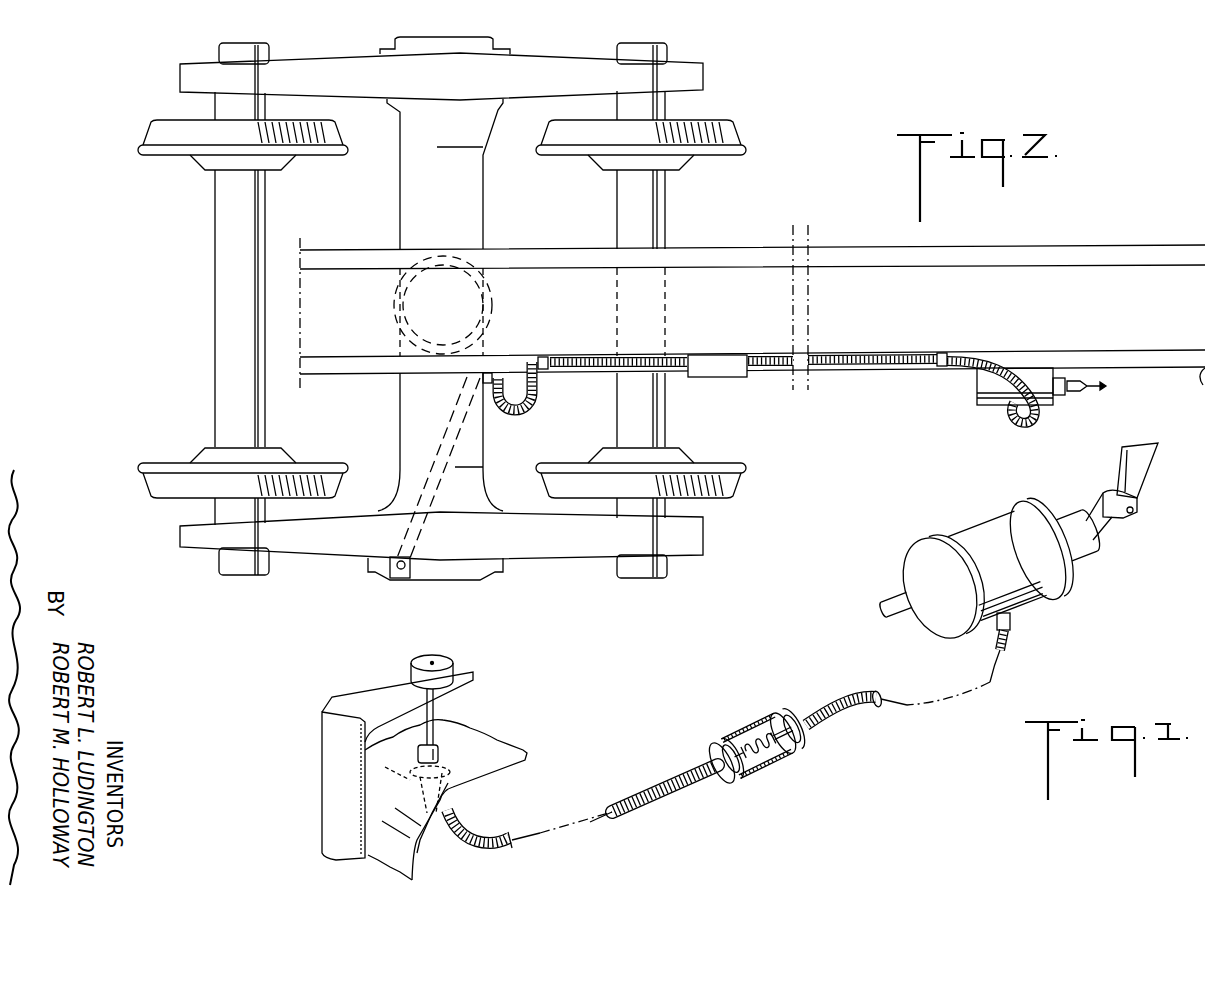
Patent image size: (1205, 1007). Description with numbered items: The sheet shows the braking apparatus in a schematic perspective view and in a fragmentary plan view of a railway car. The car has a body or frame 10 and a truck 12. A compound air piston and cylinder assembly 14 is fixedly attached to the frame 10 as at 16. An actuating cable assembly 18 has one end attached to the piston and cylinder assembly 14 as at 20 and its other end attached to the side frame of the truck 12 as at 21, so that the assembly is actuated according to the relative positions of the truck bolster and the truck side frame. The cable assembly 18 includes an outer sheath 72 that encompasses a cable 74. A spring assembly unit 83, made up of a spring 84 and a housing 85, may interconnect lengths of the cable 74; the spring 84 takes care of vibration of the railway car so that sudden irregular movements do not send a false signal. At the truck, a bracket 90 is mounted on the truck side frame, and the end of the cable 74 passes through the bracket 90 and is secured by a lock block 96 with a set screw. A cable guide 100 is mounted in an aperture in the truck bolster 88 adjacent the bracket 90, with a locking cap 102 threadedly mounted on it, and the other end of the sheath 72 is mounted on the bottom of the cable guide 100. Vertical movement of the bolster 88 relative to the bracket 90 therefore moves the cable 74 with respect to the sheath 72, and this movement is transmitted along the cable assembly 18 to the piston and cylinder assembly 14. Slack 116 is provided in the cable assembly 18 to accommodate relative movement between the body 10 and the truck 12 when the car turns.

In FIG. 2, the body or frame 10 is at (437, 437).
In FIG. 2, the truck 12 is at (122, 99).
In FIG. 2, the compound air piston and cylinder assembly 14 is at (988, 395).
In FIG. 1, the compound air piston and cylinder assembly 14 is at (976, 530).
In FIG. 2, the attachment of the piston and cylinder assembly to the frame 16 is at (1043, 368).
In FIG. 2, the actuating cable assembly 18 is at (870, 362).
In FIG. 1, the actuating cable assembly 18 is at (640, 787).
In FIG. 2, the attachment of cable assembly to piston and cylinder assembly 20 is at (1013, 412).
In FIG. 1, the attachment of cable assembly to piston and cylinder assembly 20 is at (1013, 622).
In FIG. 2, the attachment of cable assembly to truck side frame 21 is at (401, 580).
In FIG. 1, the outer sheath 72 is at (853, 707).
In FIG. 1, the cable 74 is at (895, 722).
In FIG. 1, the spring assembly unit 83 is at (778, 680).
In FIG. 2, the spring 84 is at (725, 372).
In FIG. 1, the spring 84 is at (772, 762).
In FIG. 1, the housing 85 is at (787, 757).
In FIG. 1, the truck bolster 88 is at (521, 753).
In FIG. 1, the bracket 90 is at (333, 697).
In FIG. 1, the lock block 96 is at (446, 672).
In FIG. 1, the cable guide 100 is at (416, 789).
In FIG. 1, the locking cap 102 is at (440, 750).
In FIG. 2, the slack 116 is at (538, 397).